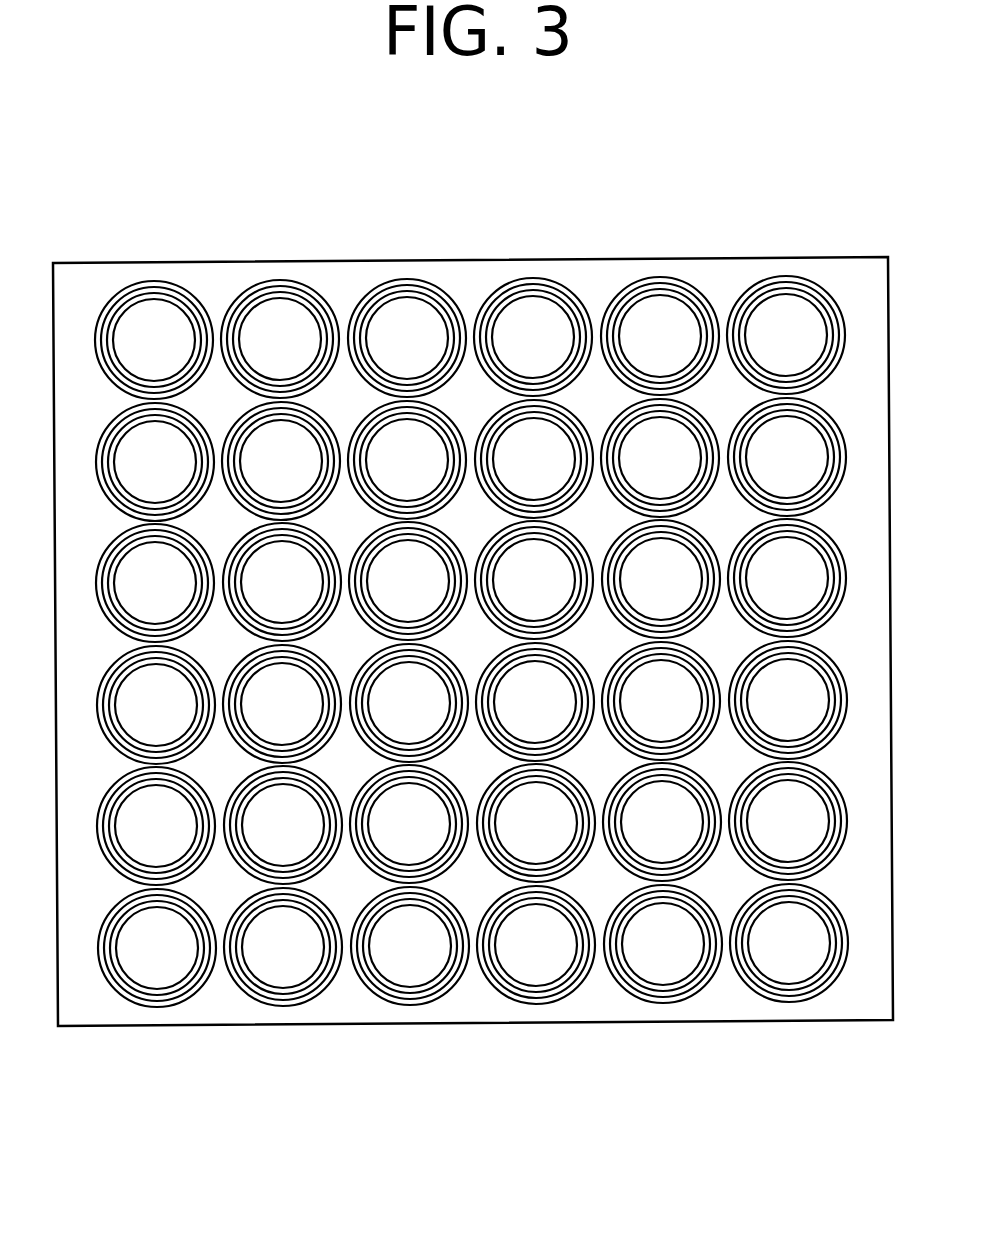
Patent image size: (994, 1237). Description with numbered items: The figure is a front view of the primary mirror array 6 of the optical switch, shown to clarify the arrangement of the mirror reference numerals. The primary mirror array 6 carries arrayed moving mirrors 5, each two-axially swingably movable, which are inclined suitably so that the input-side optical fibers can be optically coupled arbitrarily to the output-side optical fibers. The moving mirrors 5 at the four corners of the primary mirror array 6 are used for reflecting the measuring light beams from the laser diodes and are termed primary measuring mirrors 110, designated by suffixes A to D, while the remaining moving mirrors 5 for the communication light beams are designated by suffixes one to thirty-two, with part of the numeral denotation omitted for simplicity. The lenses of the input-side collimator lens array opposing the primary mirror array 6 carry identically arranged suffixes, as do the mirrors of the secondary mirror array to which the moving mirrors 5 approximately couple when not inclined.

The primary mirror array 6 is at (678, 218).
The moving mirror 5 is at (279, 307).
The primary measuring mirror 110 is at (150, 307).